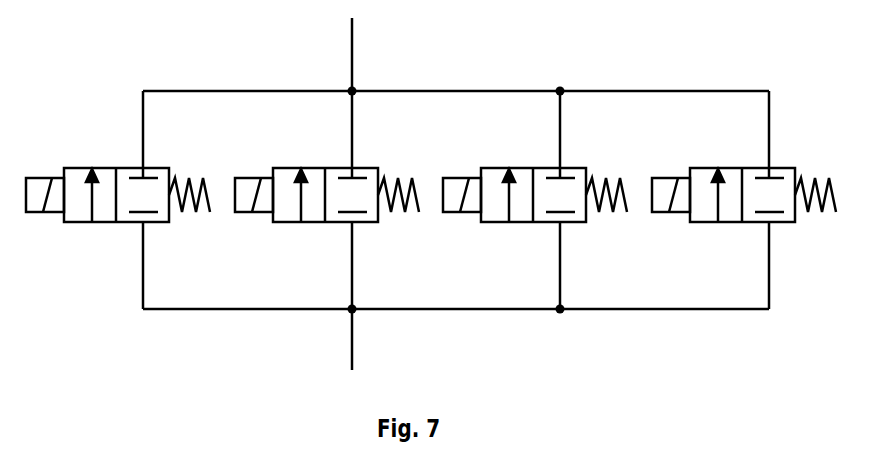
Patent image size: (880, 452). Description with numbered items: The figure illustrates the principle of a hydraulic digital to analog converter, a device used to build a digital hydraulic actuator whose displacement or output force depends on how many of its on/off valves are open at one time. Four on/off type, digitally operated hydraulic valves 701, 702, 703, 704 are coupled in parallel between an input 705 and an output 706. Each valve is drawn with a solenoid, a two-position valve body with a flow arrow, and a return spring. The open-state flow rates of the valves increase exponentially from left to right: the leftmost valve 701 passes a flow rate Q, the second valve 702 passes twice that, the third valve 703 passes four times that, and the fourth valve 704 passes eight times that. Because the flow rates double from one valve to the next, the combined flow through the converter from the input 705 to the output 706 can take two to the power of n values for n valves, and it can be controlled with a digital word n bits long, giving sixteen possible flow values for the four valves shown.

The on/off valve 701 is at (157, 168).
The on/off valve 702 is at (366, 168).
The on/off valve 703 is at (574, 168).
The on/off valve 704 is at (783, 168).
The input 705 is at (353, 360).
The output 706 is at (353, 58).